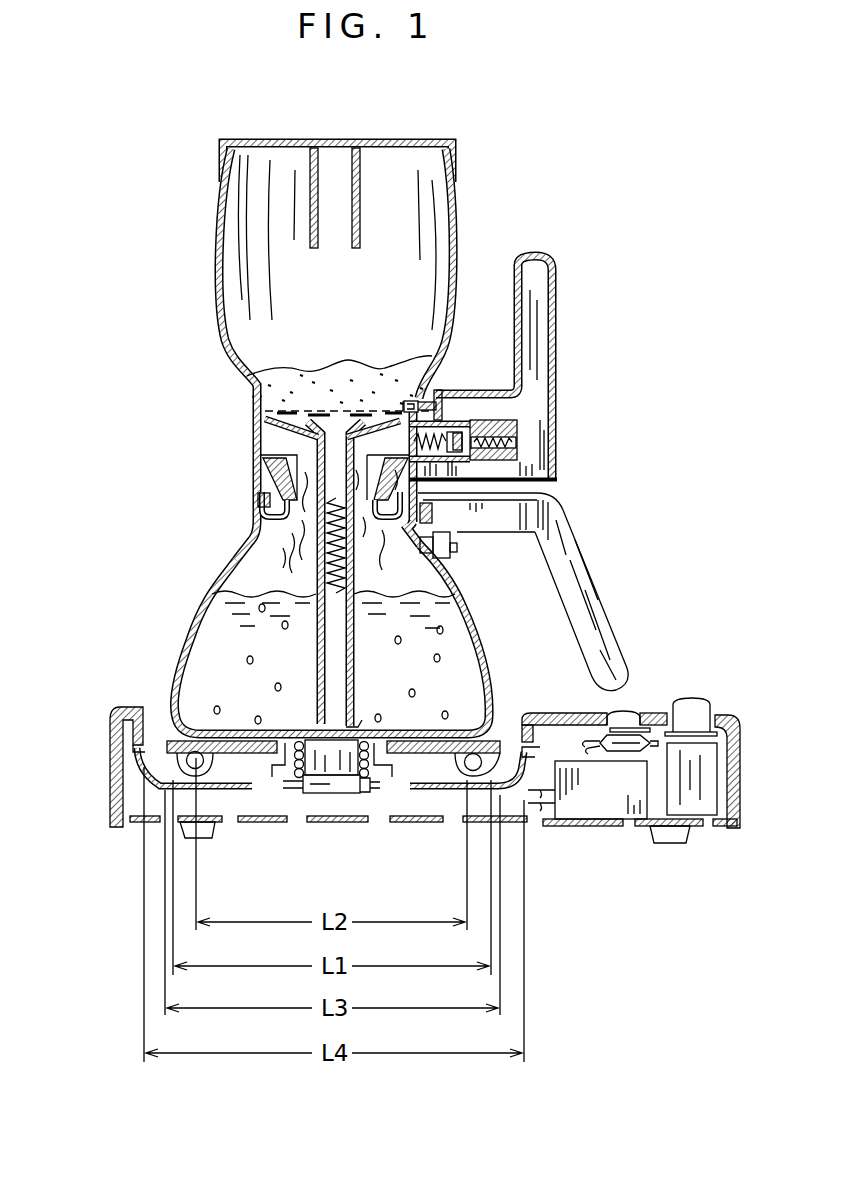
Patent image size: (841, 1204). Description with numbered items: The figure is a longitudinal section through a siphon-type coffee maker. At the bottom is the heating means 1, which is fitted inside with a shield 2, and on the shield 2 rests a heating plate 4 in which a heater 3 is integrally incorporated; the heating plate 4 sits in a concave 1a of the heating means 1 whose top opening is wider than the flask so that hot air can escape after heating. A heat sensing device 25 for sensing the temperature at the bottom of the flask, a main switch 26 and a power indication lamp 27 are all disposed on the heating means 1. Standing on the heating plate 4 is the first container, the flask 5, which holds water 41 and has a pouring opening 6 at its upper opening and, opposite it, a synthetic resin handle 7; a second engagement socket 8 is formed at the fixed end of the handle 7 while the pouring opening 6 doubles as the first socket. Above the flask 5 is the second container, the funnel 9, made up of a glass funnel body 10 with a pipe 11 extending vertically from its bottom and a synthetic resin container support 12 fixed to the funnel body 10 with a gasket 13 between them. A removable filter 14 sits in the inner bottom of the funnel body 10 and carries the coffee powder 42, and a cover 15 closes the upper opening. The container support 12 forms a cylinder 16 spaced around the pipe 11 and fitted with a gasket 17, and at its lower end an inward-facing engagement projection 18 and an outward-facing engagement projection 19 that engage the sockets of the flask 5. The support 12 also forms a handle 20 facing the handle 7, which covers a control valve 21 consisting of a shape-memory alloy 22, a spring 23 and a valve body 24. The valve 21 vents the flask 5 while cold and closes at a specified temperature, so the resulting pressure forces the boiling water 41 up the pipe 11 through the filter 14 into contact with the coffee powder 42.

The heating means 1 is at (112, 744).
The concave 1a is at (158, 737).
The shield 2 is at (238, 798).
The heater 3 is at (465, 780).
The heating plate 4 is at (420, 755).
The first container (flask) 5 is at (478, 636).
The pouring opening 6 is at (258, 494).
The handle 7 is at (598, 586).
The second engagement socket 8 is at (428, 502).
The second container (funnel) 9 is at (248, 392).
The funnel body 10 is at (453, 226).
The pipe 11 is at (315, 640).
The container support (annular member) 12 is at (257, 458).
The gasket 13 is at (257, 440).
The filter 14 is at (356, 408).
The cover 15 is at (452, 142).
The cylinder 16 is at (258, 480).
The gasket 17 is at (256, 542).
The engagement projection (first convex portion) 18 is at (258, 512).
The engagement projection (second convex portion) 19 is at (440, 530).
The handle 20 is at (557, 352).
The control valve 21 is at (478, 392).
The shape-memory alloy 22 is at (442, 418).
The spring 23 is at (514, 443).
The valve body 24 is at (470, 421).
The heat sensing device 25 is at (333, 776).
The main switch 26 is at (725, 714).
The power indication lamp 27 is at (606, 712).
The water 41 is at (200, 665).
The coffee powder 42 is at (372, 382).